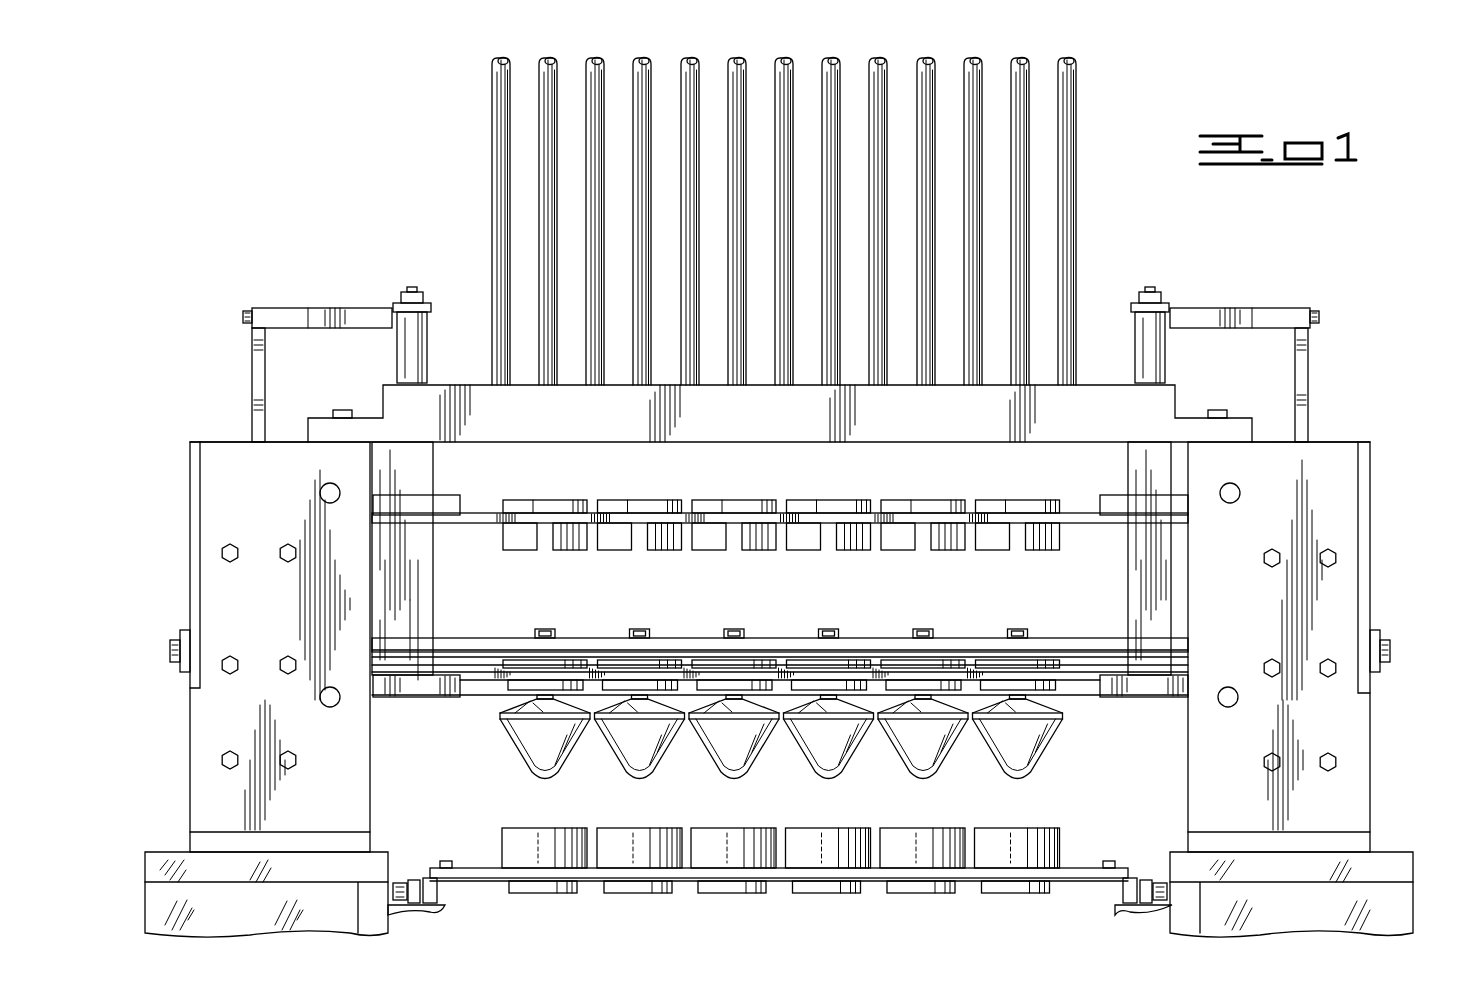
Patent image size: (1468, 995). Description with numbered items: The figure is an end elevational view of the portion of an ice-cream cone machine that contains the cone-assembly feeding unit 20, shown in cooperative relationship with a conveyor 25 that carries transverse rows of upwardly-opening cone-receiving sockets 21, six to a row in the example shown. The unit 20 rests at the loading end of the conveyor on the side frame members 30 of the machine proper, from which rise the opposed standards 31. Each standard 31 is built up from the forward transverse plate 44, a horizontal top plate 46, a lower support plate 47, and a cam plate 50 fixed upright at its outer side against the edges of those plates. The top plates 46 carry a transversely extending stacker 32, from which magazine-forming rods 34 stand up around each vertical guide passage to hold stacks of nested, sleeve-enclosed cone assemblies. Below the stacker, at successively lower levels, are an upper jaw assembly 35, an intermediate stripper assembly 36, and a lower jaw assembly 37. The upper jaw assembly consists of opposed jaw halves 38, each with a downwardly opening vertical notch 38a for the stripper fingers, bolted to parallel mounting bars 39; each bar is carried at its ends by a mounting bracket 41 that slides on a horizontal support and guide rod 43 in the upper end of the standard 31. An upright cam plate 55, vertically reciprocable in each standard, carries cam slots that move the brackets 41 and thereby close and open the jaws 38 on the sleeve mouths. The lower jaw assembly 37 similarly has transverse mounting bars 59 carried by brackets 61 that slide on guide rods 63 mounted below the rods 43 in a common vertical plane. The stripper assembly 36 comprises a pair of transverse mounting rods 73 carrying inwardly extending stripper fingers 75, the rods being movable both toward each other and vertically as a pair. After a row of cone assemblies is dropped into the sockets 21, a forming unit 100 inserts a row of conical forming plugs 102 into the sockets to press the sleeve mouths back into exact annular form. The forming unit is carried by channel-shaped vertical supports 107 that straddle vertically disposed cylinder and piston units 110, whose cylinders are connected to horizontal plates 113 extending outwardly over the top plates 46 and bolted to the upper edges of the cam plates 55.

The unit 20 is at (1100, 303).
The cone-receiving cups or sockets 21 is at (605, 828).
The conveyor 25 is at (1082, 855).
The side frame members 30 is at (160, 855).
The standards 31 is at (215, 481).
The stacker 32 is at (710, 448).
The magazine-forming rods 34 is at (1090, 127).
The upper jaw assembly 35 is at (778, 525).
The intermediate stripper assembly 36 is at (780, 666).
The lower jaw assembly 37 is at (1058, 705).
The jaw halves 38 is at (625, 500).
The vertical notch 38a is at (640, 540).
The mounting bars 39 is at (478, 510).
The mounting bracket 41 is at (440, 495).
The support and guide rod 43 is at (332, 484).
The forward transverse plate 44 is at (277, 612).
The top plate 46 is at (222, 448).
The lower support plate 47 is at (318, 835).
The cam plate 50 is at (195, 548).
The cam plate 55 is at (265, 382).
The mounting bars 59 is at (475, 698).
The brackets 61 is at (412, 690).
The guide rods 63 is at (330, 707).
The mounting rods 73 is at (870, 640).
The stripper fingers 75 is at (815, 640).
The forming unit 100 is at (803, 756).
The forming plugs 102 is at (740, 780).
The vertical supports 107 is at (425, 600).
The cylinder and piston units 110 is at (427, 358).
The horizontal plates 113 is at (340, 310).